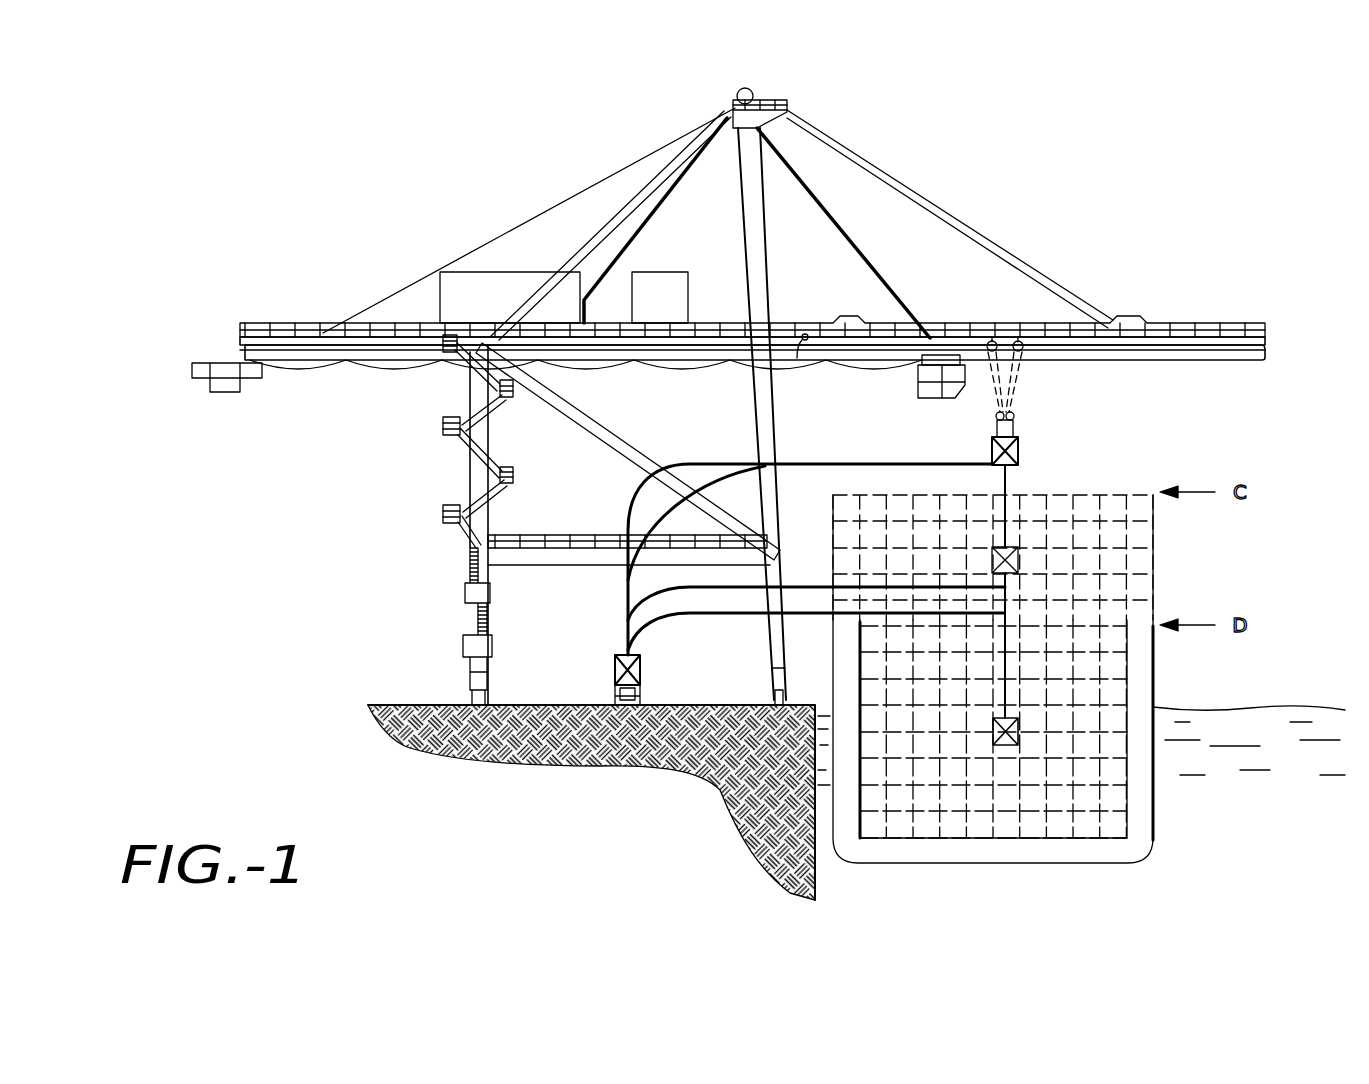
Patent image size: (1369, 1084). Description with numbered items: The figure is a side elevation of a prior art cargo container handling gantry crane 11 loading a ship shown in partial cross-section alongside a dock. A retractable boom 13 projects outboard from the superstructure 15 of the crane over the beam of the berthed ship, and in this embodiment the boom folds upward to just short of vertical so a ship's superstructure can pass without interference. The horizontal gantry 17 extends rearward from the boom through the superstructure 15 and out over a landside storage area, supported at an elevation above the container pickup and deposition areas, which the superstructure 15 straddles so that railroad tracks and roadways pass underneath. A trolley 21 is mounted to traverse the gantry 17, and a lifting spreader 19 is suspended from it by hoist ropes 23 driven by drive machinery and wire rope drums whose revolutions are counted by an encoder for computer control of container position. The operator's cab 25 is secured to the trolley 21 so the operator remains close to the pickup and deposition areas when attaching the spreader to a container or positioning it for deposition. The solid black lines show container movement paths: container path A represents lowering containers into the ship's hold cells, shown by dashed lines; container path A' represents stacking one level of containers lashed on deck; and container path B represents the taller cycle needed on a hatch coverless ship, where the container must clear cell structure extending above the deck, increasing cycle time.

The cargo container handling gantry crane 11 is at (742, 380).
The retractable boom 13 is at (1222, 360).
The superstructure 15 is at (767, 115).
The horizontal gantry 17 is at (657, 347).
The lifting spreader 19 is at (1015, 432).
The trolley 21 is at (1005, 340).
The hoist ropes 23 is at (1010, 402).
The operator's cab 25 is at (918, 373).
The container path A is at (815, 637).
The container path A' is at (816, 578).
The container path B is at (827, 462).